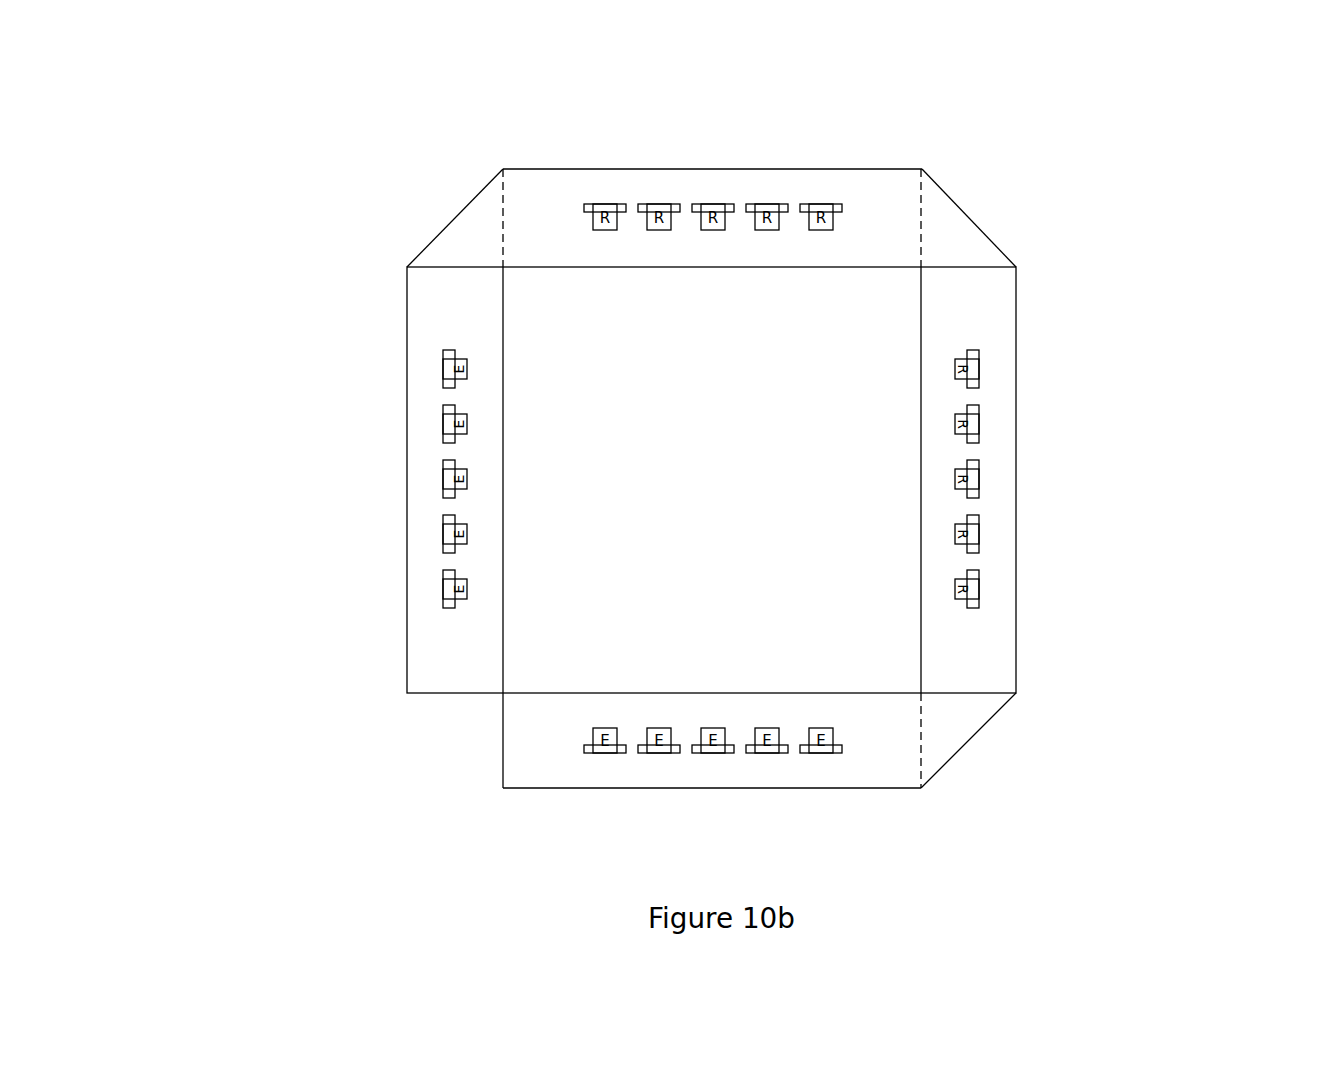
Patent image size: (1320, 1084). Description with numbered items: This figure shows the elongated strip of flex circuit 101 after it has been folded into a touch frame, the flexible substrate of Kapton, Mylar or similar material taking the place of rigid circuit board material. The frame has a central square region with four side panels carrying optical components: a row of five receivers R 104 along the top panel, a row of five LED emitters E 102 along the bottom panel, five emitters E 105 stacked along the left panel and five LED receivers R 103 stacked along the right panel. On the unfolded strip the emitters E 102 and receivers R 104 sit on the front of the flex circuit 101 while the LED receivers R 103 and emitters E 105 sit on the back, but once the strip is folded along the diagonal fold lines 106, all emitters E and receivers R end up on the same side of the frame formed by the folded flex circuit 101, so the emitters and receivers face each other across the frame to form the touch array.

The flex circuit 101 is at (407, 404).
The LED emitters E 102 is at (585, 746).
The LED receivers R 103 is at (980, 375).
The receivers R 104 is at (587, 202).
The emitters E 105 is at (440, 476).
The fold lines 106 is at (962, 748).